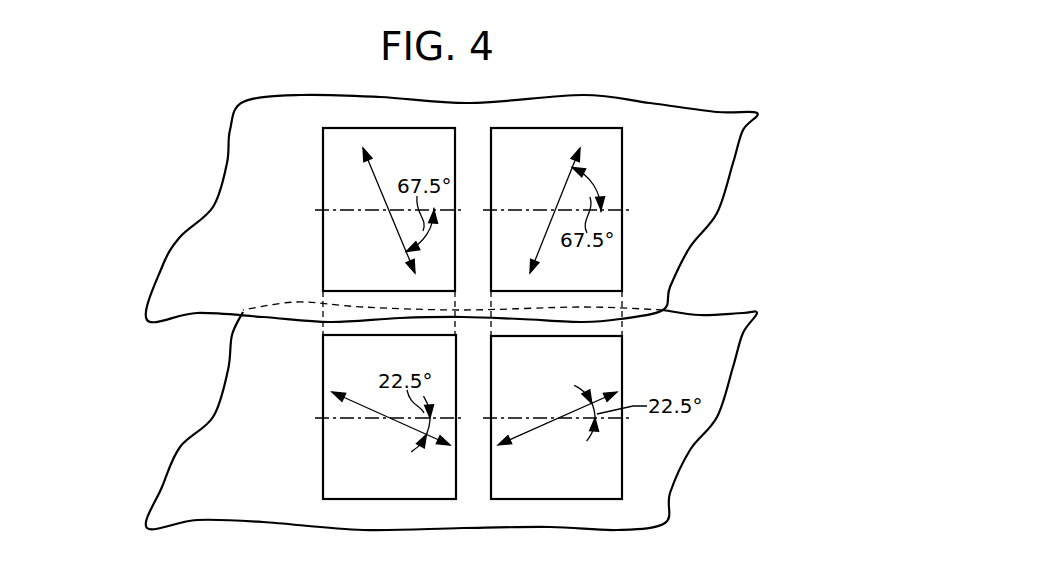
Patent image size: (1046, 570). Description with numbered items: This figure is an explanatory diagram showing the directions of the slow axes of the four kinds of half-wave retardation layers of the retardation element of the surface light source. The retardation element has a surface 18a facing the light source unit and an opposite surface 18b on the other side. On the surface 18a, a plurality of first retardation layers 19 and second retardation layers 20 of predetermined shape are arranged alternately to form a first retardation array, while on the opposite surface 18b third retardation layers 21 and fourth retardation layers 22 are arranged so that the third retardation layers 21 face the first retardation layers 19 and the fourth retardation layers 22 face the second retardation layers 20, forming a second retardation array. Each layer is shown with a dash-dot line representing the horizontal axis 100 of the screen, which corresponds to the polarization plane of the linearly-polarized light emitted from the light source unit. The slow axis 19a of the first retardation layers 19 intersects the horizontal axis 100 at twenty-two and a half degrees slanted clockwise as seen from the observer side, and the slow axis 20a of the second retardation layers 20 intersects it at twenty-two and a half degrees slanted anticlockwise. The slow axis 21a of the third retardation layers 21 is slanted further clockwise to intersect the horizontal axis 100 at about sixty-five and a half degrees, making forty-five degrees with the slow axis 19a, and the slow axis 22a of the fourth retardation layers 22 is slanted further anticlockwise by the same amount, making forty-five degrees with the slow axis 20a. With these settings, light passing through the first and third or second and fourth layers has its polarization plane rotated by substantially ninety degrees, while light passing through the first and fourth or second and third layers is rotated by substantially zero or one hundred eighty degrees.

The surface facing the light source unit 18a is at (180, 483).
The opposite surface 18b is at (180, 273).
The first retardation layer 19 is at (323, 362).
The second retardation layer 20 is at (622, 362).
The third retardation layer 21 is at (323, 250).
The fourth retardation layer 22 is at (622, 163).
The slow axis of the first retardation layer 19a is at (407, 423).
The slow axis of the second retardation layer 20a is at (533, 432).
The slow axis of the third retardation layer 21a is at (393, 228).
The slow axis of the fourth retardation layer 22a is at (562, 190).
The horizontal axis 100 is at (343, 207).